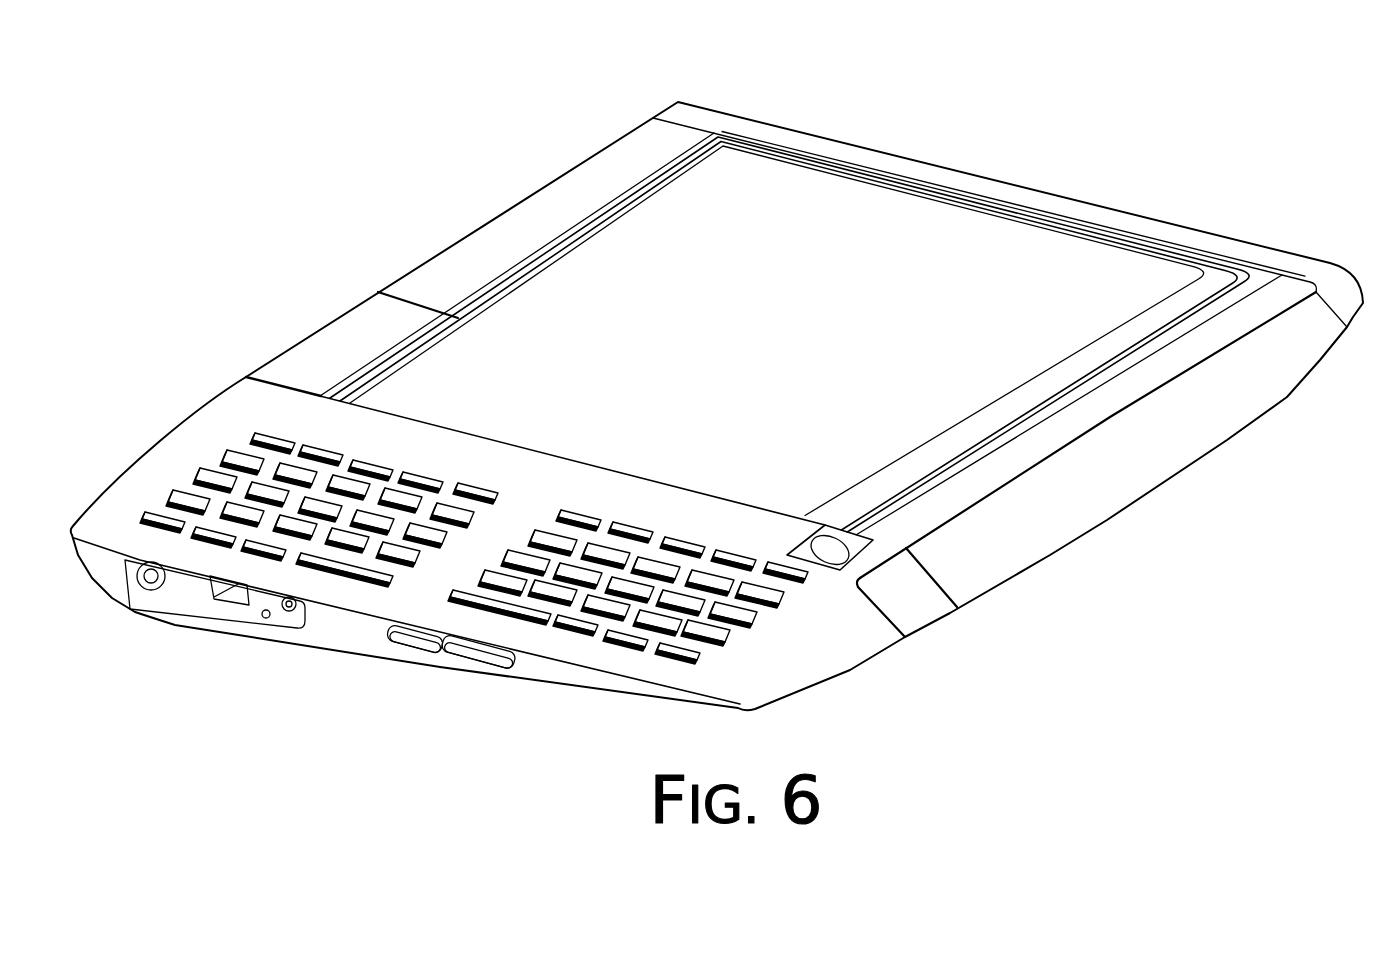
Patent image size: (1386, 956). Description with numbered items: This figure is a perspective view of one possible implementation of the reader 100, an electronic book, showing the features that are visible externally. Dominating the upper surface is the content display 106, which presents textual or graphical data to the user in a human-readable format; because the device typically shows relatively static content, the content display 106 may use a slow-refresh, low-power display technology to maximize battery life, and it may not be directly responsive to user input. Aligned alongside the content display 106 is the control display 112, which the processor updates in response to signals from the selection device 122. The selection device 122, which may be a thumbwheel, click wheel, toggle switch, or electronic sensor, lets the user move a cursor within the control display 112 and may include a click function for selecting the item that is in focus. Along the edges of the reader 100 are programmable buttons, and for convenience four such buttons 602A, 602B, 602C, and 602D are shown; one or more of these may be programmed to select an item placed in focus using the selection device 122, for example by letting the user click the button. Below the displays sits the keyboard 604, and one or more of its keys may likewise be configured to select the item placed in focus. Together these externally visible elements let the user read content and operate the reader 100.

The reader 100 is at (1150, 108).
The content display 106 is at (764, 330).
The control display 112 is at (1223, 302).
The selection device 122 is at (825, 535).
The programmable button 602A is at (1099, 500).
The programmable button 602B is at (920, 613).
The programmable button 602C is at (546, 203).
The programmable button 602D is at (363, 332).
The keyboard 604 is at (757, 649).